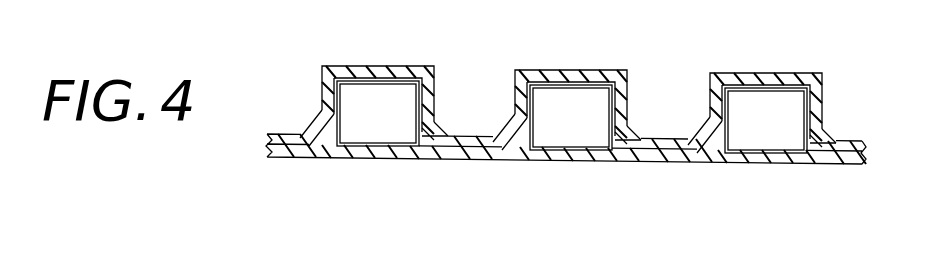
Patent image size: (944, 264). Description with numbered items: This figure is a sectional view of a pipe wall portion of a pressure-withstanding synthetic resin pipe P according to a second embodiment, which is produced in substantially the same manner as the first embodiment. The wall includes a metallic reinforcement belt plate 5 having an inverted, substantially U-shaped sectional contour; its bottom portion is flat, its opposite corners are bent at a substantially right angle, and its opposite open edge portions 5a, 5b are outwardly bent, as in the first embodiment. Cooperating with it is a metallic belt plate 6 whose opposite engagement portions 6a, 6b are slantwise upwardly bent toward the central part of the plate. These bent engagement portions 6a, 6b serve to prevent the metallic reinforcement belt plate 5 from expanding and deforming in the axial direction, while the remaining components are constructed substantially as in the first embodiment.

The pressure-withstanding synthetic resin pipe P is at (348, 50).
The metallic reinforcement belt plate 5 is at (588, 90).
The open edge portion 5a is at (716, 155).
The open edge portion 5b is at (814, 155).
The metallic belt plate 6 is at (550, 140).
The engagement portion 6a is at (509, 128).
The engagement portion 6b is at (624, 128).